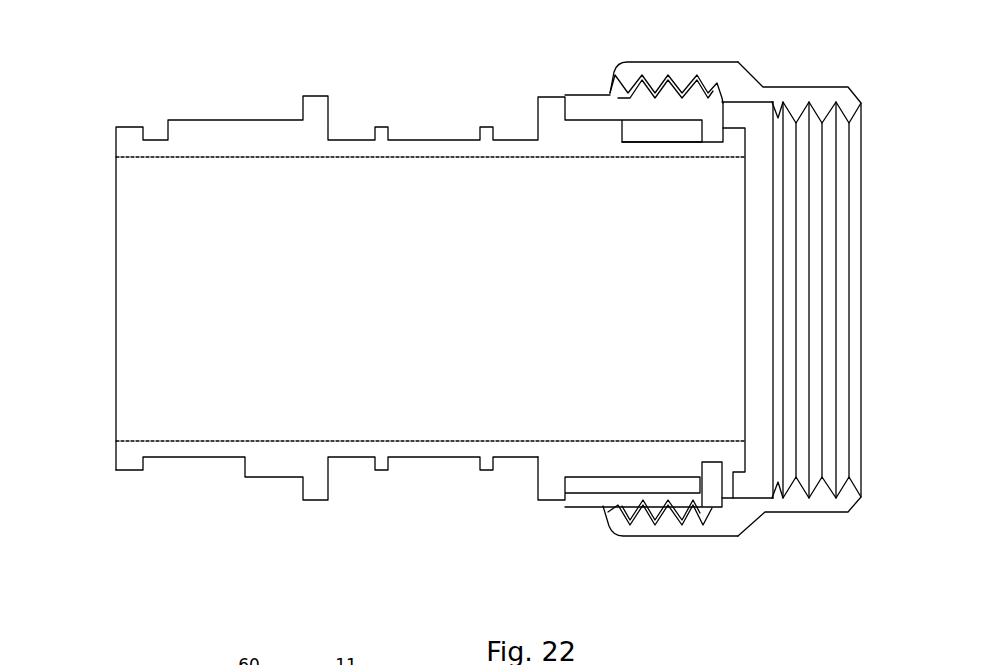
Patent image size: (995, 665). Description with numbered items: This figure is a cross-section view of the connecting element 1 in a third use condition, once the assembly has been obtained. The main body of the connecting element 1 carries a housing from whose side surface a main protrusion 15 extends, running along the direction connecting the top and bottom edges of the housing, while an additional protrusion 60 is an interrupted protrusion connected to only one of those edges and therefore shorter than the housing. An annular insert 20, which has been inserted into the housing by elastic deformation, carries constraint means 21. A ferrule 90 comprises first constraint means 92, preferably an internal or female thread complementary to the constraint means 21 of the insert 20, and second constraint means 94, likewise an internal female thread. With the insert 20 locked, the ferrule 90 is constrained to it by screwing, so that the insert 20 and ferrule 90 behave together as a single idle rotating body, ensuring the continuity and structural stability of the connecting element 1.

The connecting element 1 is at (112, 91).
The main protrusion 15 is at (235, 140).
The annular insert 20 is at (577, 100).
The constraint means 21 is at (622, 518).
The additional protrusion 60 is at (277, 466).
The ferrule 90 is at (740, 62).
The first constraint means 92 is at (692, 513).
The second constraint means 94 is at (820, 187).